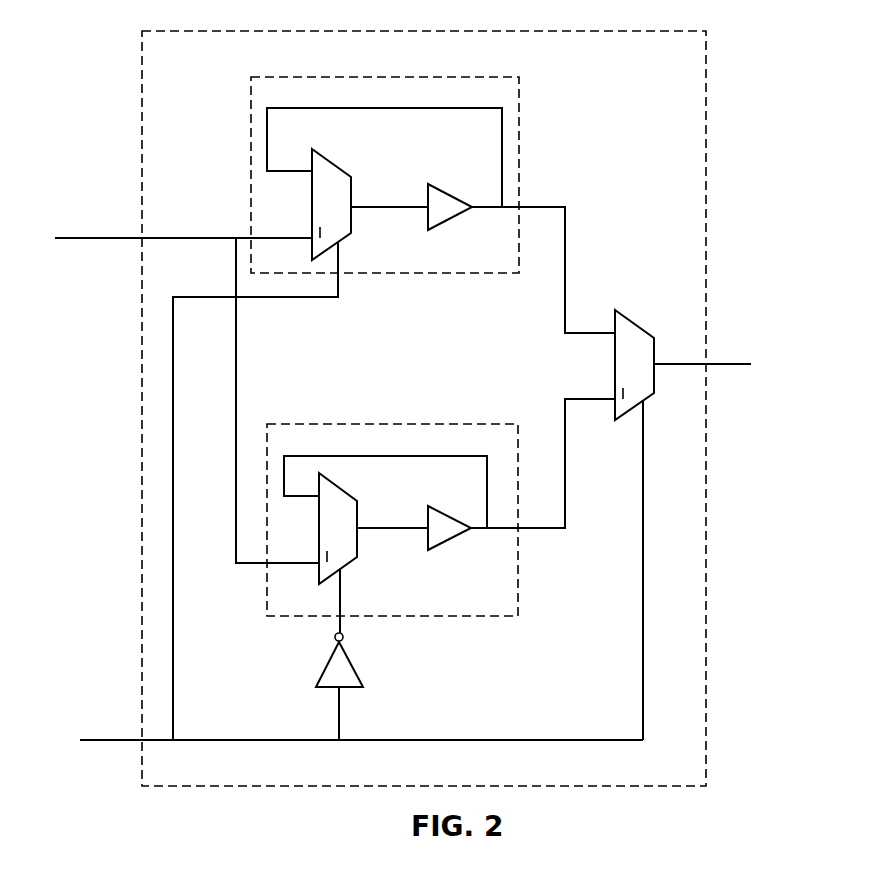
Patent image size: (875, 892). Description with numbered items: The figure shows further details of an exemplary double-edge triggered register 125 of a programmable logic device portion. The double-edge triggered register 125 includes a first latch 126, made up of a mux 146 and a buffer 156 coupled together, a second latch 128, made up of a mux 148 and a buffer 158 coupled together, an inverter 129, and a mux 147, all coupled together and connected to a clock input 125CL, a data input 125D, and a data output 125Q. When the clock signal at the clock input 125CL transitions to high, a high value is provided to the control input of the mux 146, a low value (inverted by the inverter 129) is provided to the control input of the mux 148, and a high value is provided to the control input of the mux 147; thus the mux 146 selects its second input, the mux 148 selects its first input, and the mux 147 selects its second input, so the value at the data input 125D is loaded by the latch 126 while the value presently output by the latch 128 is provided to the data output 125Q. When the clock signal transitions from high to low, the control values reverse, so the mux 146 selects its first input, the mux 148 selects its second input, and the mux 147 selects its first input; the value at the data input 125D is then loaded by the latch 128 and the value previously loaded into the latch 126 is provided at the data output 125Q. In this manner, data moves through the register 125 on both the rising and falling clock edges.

The double-edge triggered register 125 is at (683, 820).
The data input 125D is at (138, 233).
The clock input 125CL is at (138, 743).
The data output 125Q is at (720, 358).
The latch 126 is at (520, 120).
The latch 128 is at (520, 557).
The mux 146 is at (372, 163).
The mux 147 is at (628, 312).
The mux 148 is at (357, 510).
The buffer 156 is at (460, 178).
The buffer 158 is at (457, 517).
The inverter 129 is at (355, 664).